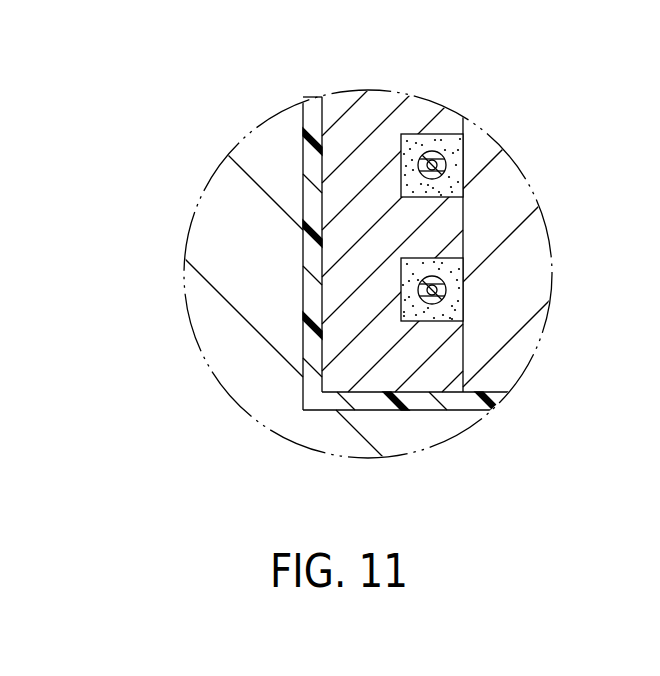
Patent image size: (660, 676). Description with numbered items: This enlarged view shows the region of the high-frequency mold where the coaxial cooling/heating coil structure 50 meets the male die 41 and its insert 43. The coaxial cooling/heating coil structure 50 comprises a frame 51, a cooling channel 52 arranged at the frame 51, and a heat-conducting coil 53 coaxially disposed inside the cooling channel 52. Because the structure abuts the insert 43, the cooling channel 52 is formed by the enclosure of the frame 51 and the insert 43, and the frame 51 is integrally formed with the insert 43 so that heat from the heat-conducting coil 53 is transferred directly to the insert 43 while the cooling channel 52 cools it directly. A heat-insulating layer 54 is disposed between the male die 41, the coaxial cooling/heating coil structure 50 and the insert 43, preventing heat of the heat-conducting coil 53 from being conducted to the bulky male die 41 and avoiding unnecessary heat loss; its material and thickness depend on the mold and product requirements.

The male die 41 is at (278, 130).
The insert 43 is at (512, 184).
The coaxial cooling/heating coil structure 50 is at (491, 196).
The frame 51 is at (443, 232).
The cooling channel 52 is at (458, 274).
The heat-conducting coil 53 is at (458, 313).
The heat-insulating layer 54 is at (311, 100).